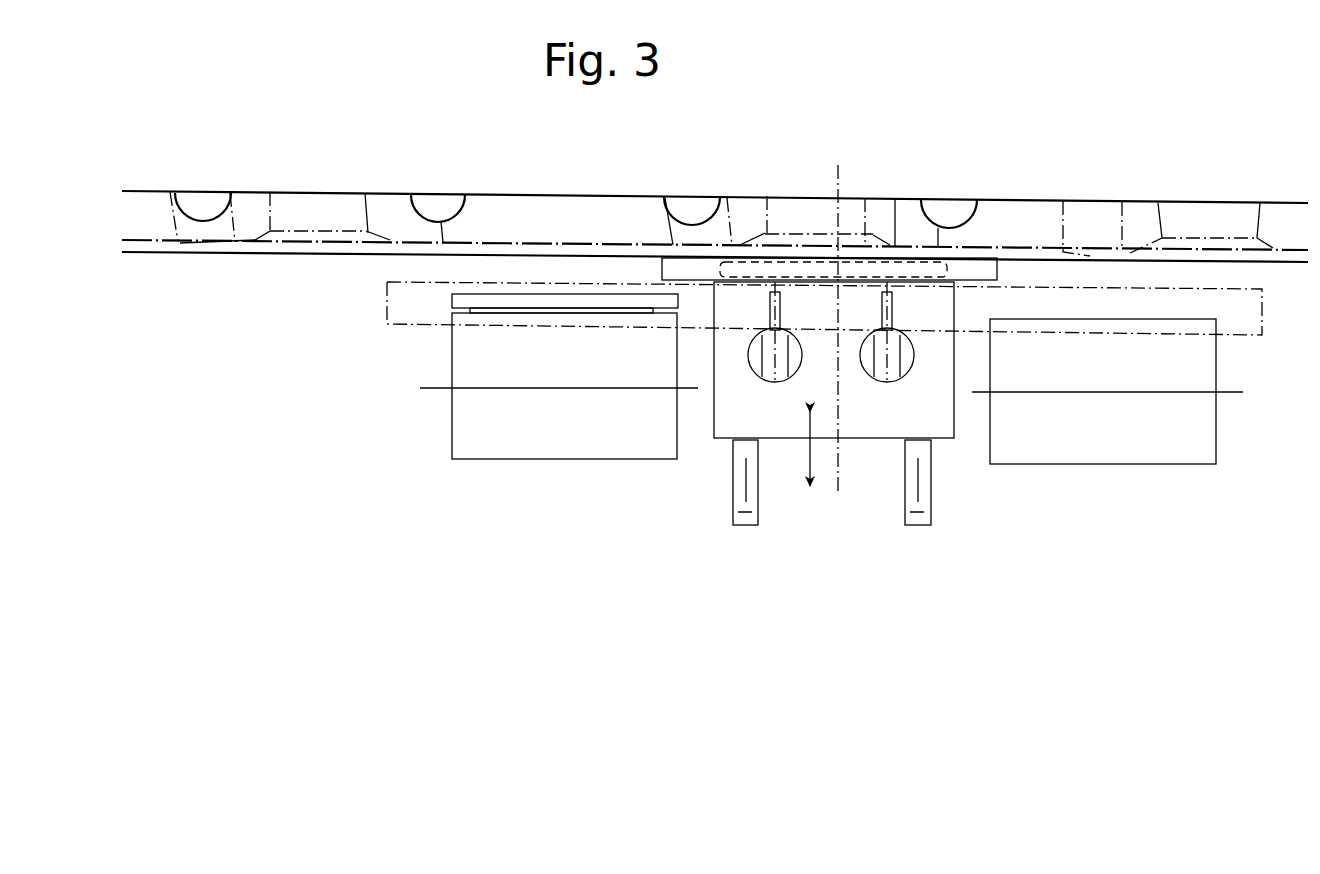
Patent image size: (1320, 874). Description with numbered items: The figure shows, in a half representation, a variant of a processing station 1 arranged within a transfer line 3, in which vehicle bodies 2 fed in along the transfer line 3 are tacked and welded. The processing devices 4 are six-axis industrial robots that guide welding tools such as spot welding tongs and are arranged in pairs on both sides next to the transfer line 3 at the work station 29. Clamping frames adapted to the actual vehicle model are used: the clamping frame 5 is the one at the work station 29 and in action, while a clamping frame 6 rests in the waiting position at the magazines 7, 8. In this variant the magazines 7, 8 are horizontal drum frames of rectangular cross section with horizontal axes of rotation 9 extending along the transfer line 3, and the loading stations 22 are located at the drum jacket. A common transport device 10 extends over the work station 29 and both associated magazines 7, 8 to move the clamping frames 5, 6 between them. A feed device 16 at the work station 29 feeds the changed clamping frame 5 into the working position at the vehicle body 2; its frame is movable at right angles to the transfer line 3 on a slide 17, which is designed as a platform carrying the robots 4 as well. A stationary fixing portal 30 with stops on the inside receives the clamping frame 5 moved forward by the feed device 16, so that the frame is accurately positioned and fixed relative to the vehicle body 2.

The processing station 1 is at (846, 562).
The vehicle body 2 is at (307, 235).
The transfer line 3 is at (262, 277).
The processing device 4 is at (775, 380).
The clamping frame 5 is at (803, 268).
The clamping frame 6 is at (452, 301).
The magazine 7 is at (490, 440).
The magazine 8 is at (1130, 452).
The axis of rotation 9 is at (442, 385).
The transport device 10 is at (570, 278).
The feed device 16 is at (724, 486).
The slide 17 is at (940, 425).
The loading station 22 is at (568, 459).
The work station 29 is at (745, 300).
The fixing portal 30 is at (983, 266).